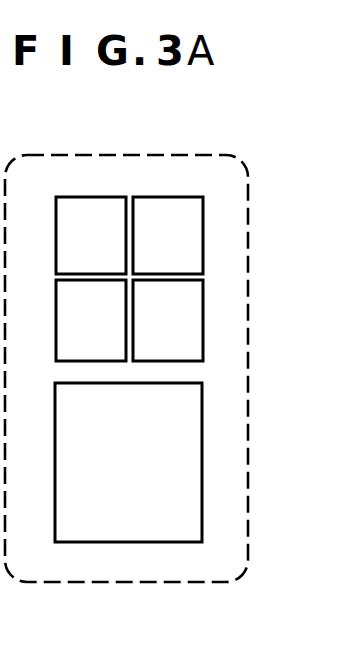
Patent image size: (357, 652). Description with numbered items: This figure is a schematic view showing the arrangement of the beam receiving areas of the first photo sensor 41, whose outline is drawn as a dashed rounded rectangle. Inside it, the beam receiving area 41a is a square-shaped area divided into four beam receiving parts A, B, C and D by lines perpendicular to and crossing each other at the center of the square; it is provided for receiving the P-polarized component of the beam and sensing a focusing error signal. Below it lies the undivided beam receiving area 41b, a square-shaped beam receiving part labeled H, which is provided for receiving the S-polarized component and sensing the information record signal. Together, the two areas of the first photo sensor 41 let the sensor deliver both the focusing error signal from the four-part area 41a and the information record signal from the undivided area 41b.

The first photo sensor 41 is at (126, 368).
The beam receiving area divided into four parts 41a is at (203, 255).
The undivided beam receiving area 41b is at (185, 533).